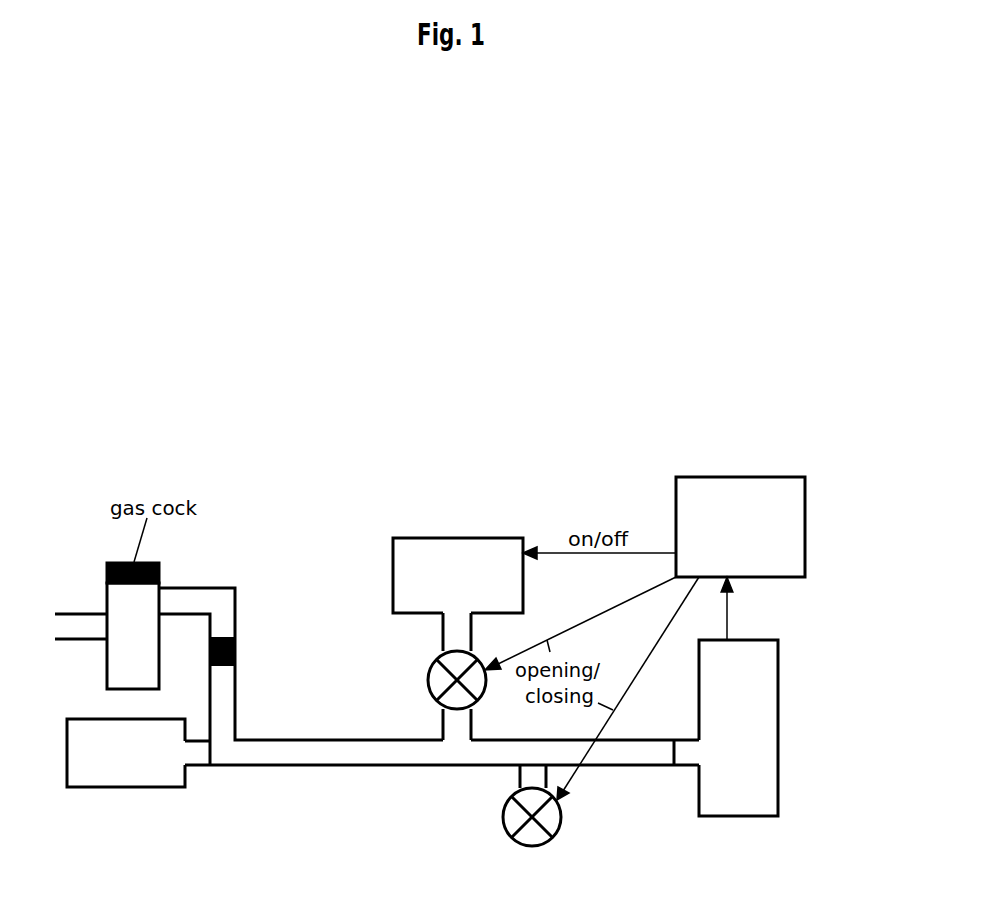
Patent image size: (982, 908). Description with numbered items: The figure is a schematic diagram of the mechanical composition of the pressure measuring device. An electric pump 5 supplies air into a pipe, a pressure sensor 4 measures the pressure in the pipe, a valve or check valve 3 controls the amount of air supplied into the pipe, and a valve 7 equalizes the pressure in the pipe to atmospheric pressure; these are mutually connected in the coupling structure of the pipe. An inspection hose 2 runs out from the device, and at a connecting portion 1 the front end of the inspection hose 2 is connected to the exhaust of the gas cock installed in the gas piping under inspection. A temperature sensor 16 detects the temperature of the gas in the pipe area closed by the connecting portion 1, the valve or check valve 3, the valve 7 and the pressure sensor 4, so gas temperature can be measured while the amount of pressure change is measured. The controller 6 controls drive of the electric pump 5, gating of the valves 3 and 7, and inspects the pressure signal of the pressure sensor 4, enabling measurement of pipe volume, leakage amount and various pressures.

The connecting portion 1 is at (297, 567).
The inspection hose 2 is at (238, 766).
The valve or check valve 3 is at (430, 670).
The pressure sensor 4 is at (773, 710).
The electric pump 5 is at (458, 575).
The controller 6 is at (740, 527).
The valve 7 is at (520, 817).
The temperature sensor 16 is at (126, 753).